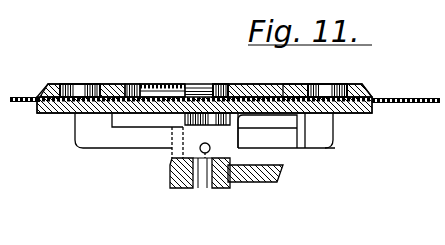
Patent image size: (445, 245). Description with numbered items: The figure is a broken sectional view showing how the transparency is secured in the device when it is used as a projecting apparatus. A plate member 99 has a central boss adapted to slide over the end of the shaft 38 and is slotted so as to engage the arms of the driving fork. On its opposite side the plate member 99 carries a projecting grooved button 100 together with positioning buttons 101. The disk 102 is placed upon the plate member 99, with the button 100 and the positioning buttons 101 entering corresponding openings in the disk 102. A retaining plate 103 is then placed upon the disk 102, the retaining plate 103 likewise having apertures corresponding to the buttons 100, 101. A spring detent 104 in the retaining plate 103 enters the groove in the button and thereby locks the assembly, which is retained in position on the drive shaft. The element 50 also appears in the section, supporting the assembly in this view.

The disk 102 is at (23, 97).
The positioning buttons 101 is at (80, 83).
The retaining plate 103 is at (110, 82).
The spring detent 104 is at (170, 83).
The projecting grooved button 100 is at (217, 83).
The plate member 99 is at (72, 114).
The frame 50 is at (313, 132).
The shaft 38 is at (170, 167).